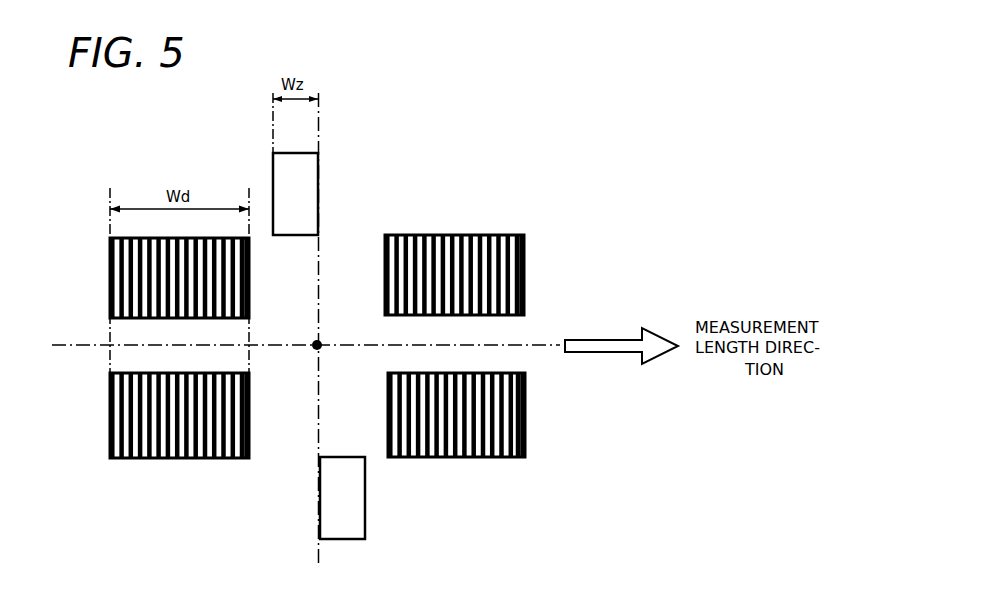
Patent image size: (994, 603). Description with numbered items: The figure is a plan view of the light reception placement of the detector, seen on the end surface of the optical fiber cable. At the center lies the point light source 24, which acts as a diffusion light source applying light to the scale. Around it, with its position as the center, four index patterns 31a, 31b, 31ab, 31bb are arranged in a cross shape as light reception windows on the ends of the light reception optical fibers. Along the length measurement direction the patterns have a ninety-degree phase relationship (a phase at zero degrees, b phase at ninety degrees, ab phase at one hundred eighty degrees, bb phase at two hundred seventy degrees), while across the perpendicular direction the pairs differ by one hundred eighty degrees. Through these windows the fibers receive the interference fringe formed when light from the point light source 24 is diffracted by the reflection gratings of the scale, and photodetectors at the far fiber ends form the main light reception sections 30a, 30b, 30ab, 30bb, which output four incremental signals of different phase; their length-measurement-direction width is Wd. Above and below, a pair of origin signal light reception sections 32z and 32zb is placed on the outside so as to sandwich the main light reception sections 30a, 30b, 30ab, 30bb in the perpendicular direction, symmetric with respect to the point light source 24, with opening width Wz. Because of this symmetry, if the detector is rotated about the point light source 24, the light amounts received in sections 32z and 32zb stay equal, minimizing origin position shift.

The point light source 24 is at (319, 341).
The main light reception section 30a is at (110, 280).
The main light reception section 30ab is at (110, 413).
The main light reception section 30b is at (524, 273).
The main light reception section 30bb is at (525, 422).
The index pattern 31a is at (205, 238).
The index pattern 31ab is at (168, 458).
The index pattern 31b is at (480, 235).
The index pattern 31bb is at (490, 458).
The origin signal light reception section 32z is at (318, 196).
The origin signal light reception section 32zb is at (365, 528).